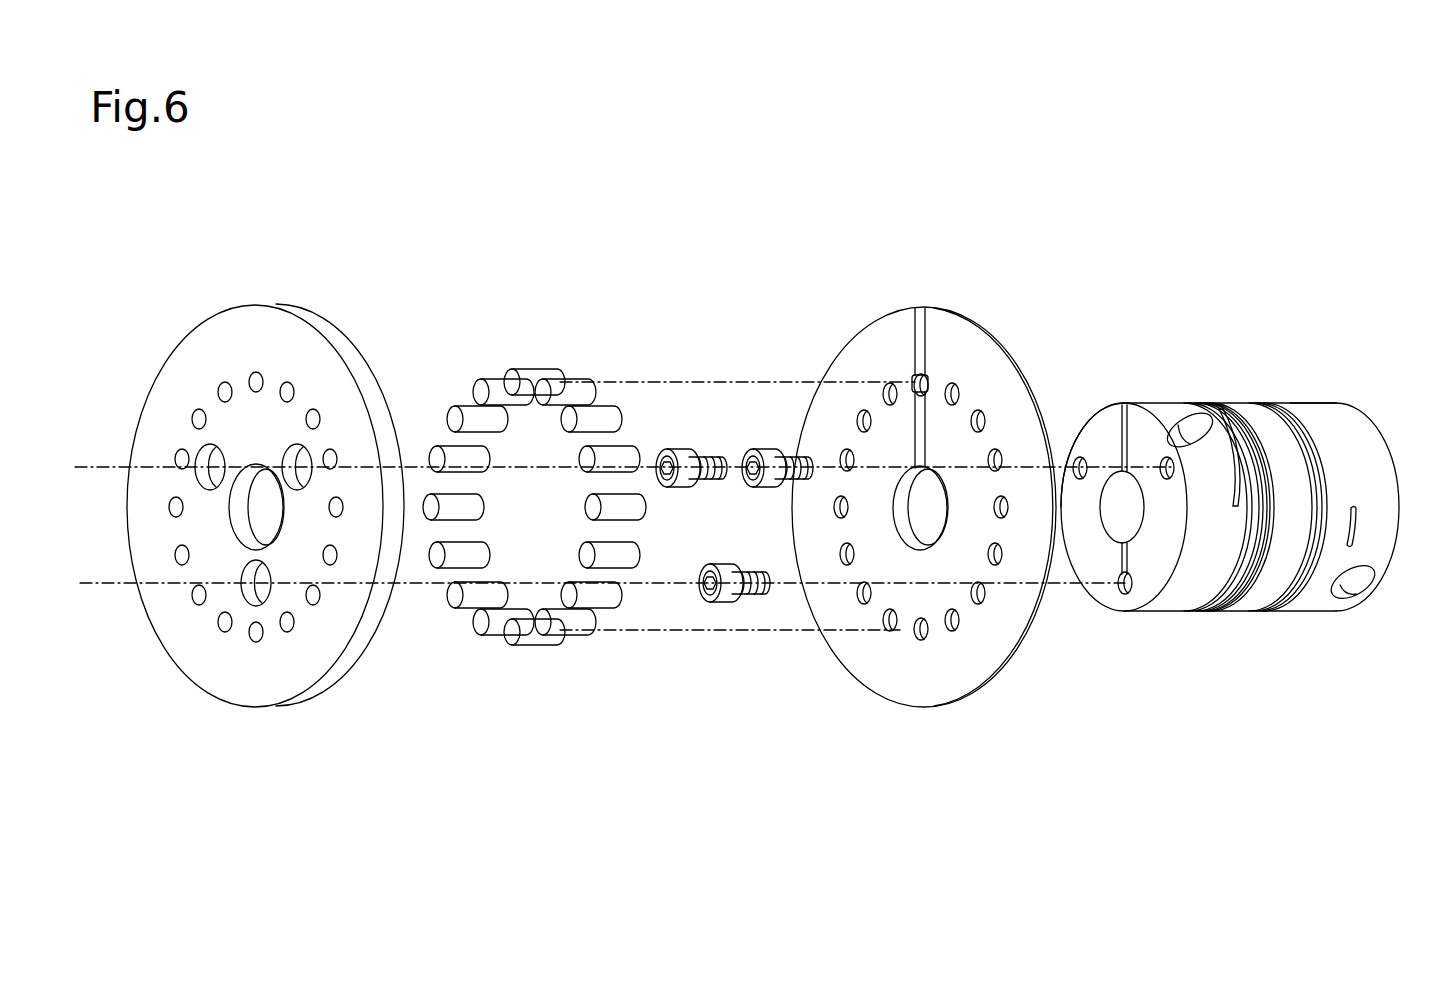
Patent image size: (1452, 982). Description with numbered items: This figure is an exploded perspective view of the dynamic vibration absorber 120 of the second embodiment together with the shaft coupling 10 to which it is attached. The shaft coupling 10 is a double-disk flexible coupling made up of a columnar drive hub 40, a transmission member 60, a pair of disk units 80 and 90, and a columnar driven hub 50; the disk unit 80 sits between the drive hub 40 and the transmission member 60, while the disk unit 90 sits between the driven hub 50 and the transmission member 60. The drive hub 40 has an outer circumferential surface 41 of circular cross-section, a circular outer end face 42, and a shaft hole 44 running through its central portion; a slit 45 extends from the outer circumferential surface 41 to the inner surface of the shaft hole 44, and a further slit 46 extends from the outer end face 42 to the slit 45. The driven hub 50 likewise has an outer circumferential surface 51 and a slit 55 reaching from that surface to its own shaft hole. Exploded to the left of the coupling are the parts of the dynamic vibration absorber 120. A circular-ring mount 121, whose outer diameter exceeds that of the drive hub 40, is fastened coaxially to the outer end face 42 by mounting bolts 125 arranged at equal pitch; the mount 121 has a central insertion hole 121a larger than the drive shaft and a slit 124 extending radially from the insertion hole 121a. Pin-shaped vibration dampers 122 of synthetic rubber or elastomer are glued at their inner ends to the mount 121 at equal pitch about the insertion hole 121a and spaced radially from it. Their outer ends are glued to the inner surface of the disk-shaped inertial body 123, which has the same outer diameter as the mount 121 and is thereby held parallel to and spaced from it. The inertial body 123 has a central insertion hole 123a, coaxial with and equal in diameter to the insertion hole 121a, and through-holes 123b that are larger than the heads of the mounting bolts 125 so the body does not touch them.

The shaft coupling 10 is at (1338, 661).
The drive hub 40 is at (1170, 606).
The outer circumferential surface 41 is at (1217, 418).
The outer end face 42 is at (1103, 598).
The shaft hole 44 is at (1110, 506).
The slit 45 is at (1233, 503).
The slit 46 is at (1122, 432).
The driven hub 50 is at (1320, 604).
The outer circumferential surface 51 is at (1335, 413).
The slit 55 is at (1357, 538).
The transmission member 60 is at (1253, 604).
The disk unit 80 is at (1210, 604).
The disk unit 90 is at (1303, 604).
The dynamic vibration absorber 120 is at (880, 266).
The mount 121 is at (882, 331).
The insertion hole 121a is at (910, 522).
The vibration dampers 122 is at (524, 374).
The inertial body 123 is at (298, 332).
The insertion hole 123a is at (250, 522).
The through-holes 123b is at (292, 462).
The slit 124 is at (921, 308).
The mounting bolts 125 is at (766, 453).